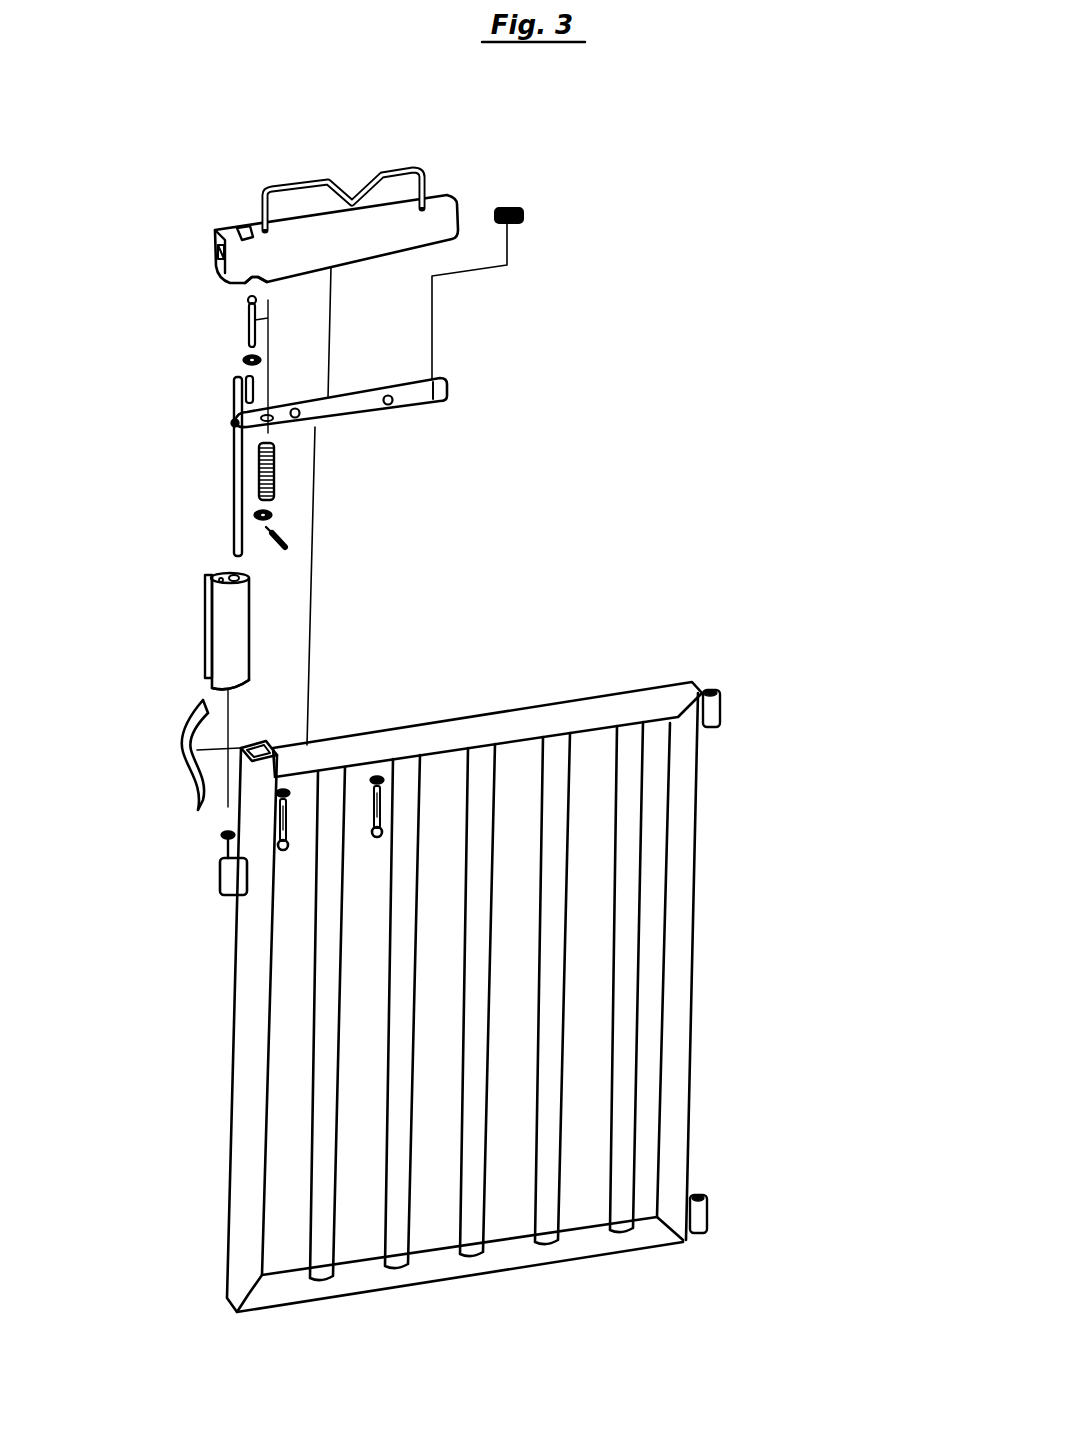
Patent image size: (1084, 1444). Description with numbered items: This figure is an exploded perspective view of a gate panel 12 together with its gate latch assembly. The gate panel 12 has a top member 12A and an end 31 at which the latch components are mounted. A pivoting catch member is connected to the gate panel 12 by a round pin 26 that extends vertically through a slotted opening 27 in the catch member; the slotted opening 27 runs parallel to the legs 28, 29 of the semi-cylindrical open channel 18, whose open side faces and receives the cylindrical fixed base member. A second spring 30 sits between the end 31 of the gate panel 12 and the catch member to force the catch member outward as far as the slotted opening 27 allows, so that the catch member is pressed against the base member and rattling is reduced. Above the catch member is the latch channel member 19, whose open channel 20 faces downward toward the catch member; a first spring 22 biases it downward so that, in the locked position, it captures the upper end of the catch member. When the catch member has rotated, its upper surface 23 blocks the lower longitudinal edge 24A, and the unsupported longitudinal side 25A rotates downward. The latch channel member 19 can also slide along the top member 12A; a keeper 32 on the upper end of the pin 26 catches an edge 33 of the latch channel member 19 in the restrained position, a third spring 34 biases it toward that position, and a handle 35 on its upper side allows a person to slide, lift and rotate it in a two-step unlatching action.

The gate panel 12 is at (680, 850).
The top member 12A is at (532, 710).
The open channel 18 is at (205, 625).
The latch channel member 19 is at (435, 212).
The open channel 20 is at (222, 270).
The first spring 22 is at (260, 455).
The upper surface 23 is at (227, 573).
The lower longitudinal edge 24A is at (240, 283).
The longitudinal side 25A is at (247, 267).
The round pin 26 is at (237, 470).
The slotted opening 27 is at (250, 576).
The leg 28 is at (213, 683).
The leg 29 is at (205, 588).
The second spring 30 is at (197, 765).
The end 31 is at (242, 975).
The keeper 32 is at (238, 378).
The edge 33 is at (240, 223).
The third spring 34 is at (523, 208).
The handle 35 is at (308, 183).